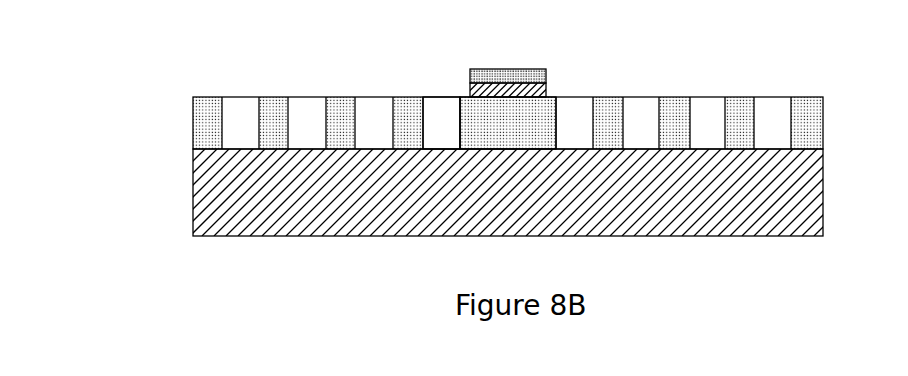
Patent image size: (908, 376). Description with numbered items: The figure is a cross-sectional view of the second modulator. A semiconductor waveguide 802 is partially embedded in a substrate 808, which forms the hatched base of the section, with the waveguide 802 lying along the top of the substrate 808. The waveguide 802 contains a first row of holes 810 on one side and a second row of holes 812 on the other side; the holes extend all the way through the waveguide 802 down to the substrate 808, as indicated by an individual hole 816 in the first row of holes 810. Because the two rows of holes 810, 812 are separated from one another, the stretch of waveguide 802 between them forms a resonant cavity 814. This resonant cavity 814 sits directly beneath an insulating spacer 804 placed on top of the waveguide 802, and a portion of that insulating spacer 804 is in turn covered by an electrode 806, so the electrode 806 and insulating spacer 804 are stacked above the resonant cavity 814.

The semiconductor waveguide 802 is at (805, 97).
The insulating spacer 804 is at (470, 90).
The electrode 806 is at (520, 69).
The substrate 808 is at (200, 196).
The first row of holes 810 is at (312, 78).
The second row of holes 812 is at (700, 72).
The resonant cavity 814 is at (540, 112).
The hole 816 is at (440, 108).